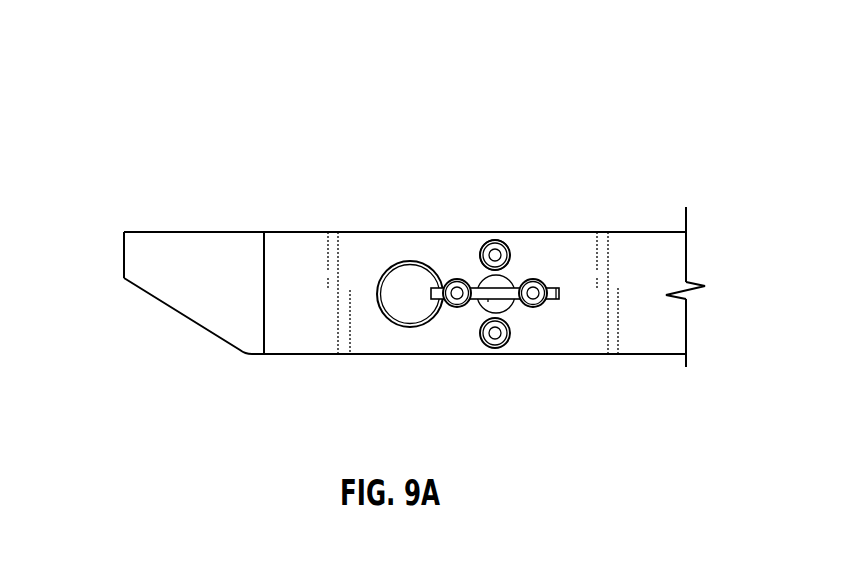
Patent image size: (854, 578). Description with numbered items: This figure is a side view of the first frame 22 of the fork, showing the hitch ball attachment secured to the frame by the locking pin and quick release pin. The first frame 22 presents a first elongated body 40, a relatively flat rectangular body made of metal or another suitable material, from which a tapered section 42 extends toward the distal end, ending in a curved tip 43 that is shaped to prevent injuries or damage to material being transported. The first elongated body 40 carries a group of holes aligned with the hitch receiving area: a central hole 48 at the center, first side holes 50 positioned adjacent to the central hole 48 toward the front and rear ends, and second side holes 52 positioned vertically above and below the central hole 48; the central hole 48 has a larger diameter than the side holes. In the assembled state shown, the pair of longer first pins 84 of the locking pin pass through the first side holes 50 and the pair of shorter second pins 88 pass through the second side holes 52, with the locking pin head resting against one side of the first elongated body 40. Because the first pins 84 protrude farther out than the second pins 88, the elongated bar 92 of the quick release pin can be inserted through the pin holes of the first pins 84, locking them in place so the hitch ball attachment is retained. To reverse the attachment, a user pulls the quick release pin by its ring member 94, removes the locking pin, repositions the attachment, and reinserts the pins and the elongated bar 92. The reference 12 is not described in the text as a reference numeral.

The vehicle frame assembly 12 is at (697, 70).
The first frame 22 is at (633, 280).
The first elongated body 40 is at (303, 248).
The tapered section 42 is at (210, 248).
The tip 43 is at (138, 258).
The central hole 48 is at (511, 281).
The first side holes 50 is at (533, 308).
The second side holes 52 is at (487, 237).
The first pins 84 is at (534, 278).
The second pins 88 is at (493, 240).
The elongated bar 92 is at (482, 311).
The ring member 94 is at (410, 327).